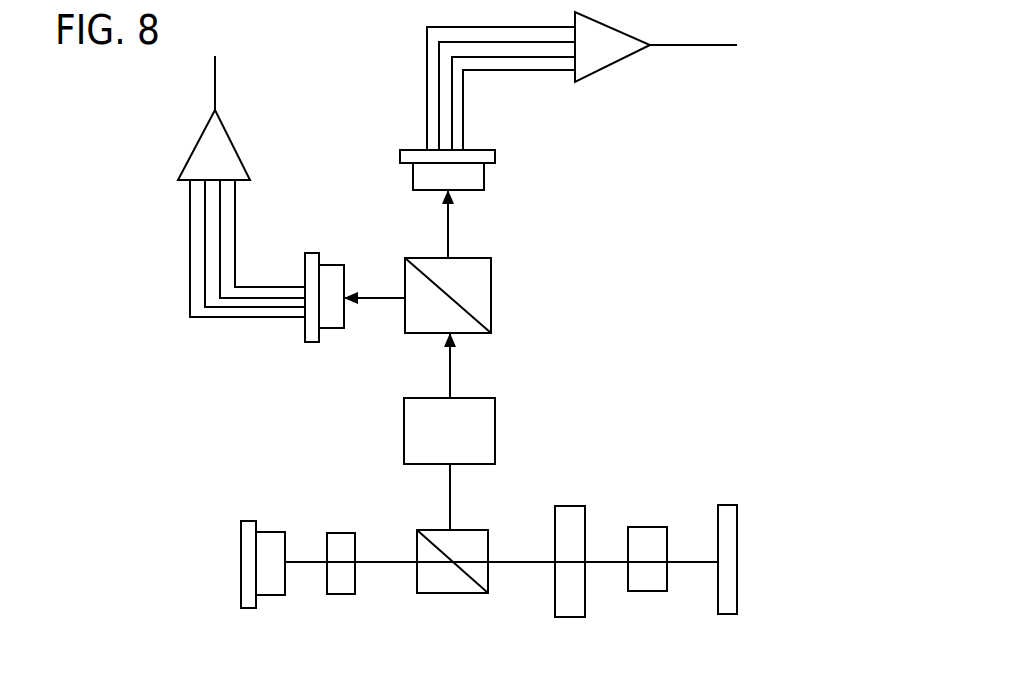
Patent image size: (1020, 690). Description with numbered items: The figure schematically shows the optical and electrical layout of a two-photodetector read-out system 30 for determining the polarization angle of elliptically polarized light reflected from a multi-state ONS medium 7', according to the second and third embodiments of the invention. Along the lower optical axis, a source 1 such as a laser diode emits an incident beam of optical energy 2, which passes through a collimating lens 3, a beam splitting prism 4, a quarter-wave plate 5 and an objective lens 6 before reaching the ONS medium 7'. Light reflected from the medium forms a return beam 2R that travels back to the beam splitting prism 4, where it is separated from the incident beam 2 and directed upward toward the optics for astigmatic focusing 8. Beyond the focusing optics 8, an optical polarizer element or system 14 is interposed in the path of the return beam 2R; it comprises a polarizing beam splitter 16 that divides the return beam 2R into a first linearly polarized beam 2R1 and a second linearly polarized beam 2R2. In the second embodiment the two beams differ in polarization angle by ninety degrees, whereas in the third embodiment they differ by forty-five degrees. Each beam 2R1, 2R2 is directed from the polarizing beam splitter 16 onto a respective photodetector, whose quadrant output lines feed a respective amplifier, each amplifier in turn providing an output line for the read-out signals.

The 2-photodetector read-out system 30 is at (118, 316).
The source of an incident beam of optical energy 1 is at (273, 601).
The incident beam of optical energy 2 is at (309, 570).
The collimating lens 3 is at (345, 598).
The beam splitting prism 4 is at (449, 598).
The quarter-wave plate 5 is at (573, 622).
The objective lens 6 is at (655, 596).
The ONS medium 7' is at (728, 592).
The optics for astigmatic focusing 8 is at (500, 422).
The return beam 2R is at (457, 367).
The first linearly polarized beam 2R1 is at (456, 226).
The second linearly polarized beam 2R2 is at (377, 306).
The optical polarizer element or system 14 is at (519, 297).
The polarizing beam splitter 16 is at (496, 291).